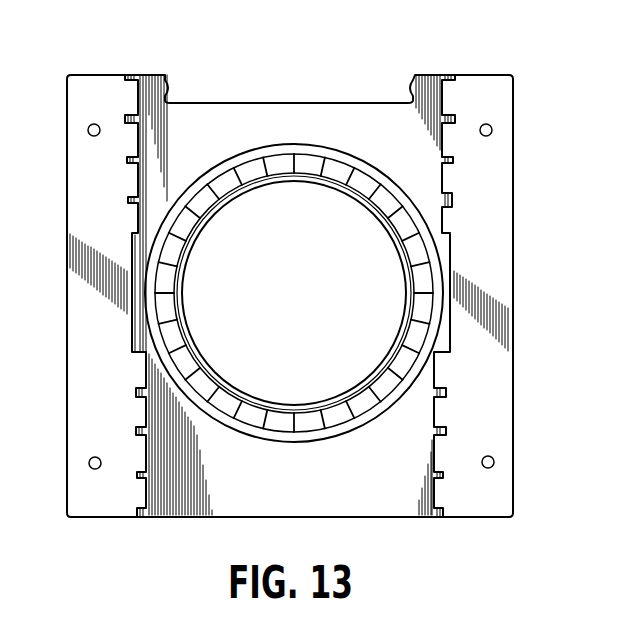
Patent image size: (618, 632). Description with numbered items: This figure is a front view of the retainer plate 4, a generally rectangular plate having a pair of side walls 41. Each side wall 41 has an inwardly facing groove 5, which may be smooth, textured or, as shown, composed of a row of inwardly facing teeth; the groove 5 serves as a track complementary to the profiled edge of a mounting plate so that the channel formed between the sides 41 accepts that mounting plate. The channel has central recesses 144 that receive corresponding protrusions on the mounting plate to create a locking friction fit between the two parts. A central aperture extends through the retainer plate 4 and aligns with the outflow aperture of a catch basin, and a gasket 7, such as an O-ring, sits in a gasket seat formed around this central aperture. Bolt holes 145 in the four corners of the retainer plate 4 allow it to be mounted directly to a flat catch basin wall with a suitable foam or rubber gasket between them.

The retainer plate 4 is at (373, 143).
The groove 5 is at (440, 515).
The gasket 7 is at (231, 172).
The side wall 41 is at (492, 178).
The central recess 144 is at (440, 251).
The bolt hole 145 is at (494, 462).